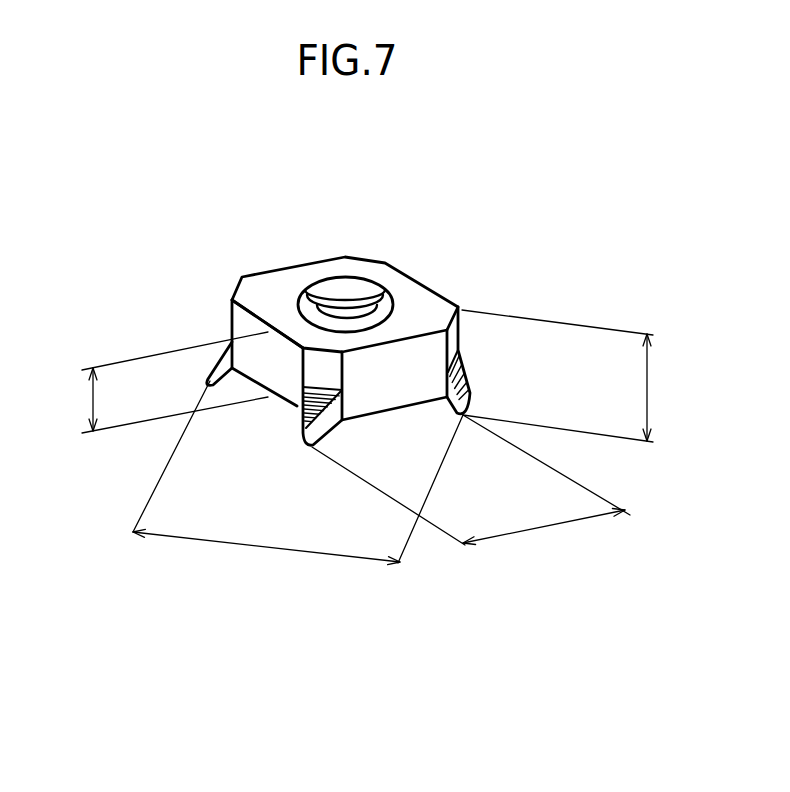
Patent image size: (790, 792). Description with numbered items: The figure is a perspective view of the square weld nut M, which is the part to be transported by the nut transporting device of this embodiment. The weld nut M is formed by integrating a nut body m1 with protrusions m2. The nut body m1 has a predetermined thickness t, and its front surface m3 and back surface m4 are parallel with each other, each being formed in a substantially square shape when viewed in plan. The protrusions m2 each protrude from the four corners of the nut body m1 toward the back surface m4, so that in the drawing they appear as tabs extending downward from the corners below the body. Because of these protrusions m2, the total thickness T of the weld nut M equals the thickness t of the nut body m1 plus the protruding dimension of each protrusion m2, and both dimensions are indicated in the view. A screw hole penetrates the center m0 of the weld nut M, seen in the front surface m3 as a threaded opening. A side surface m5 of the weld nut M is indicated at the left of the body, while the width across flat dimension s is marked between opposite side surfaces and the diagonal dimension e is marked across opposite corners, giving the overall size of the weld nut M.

The weld nut M is at (321, 332).
The center m0 is at (338, 313).
The nut body m1 is at (304, 281).
The protrusions m2 is at (297, 408).
The front surface m3 is at (262, 290).
The back surface m4 is at (405, 409).
The side surface m5 is at (240, 322).
The thickness t is at (169, 382).
The total thickness T is at (566, 376).
The diagonal dimension e is at (298, 477).
The width across flat dimension s is at (471, 486).